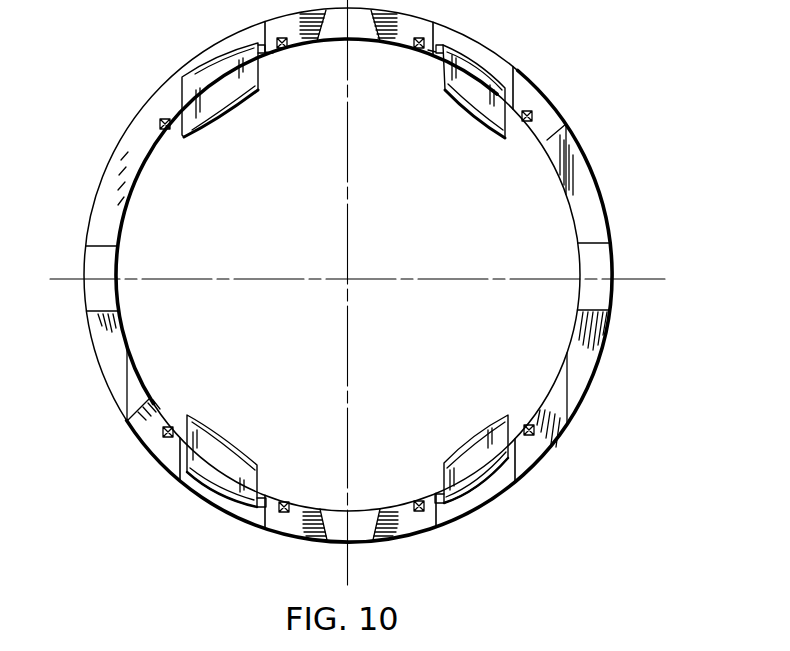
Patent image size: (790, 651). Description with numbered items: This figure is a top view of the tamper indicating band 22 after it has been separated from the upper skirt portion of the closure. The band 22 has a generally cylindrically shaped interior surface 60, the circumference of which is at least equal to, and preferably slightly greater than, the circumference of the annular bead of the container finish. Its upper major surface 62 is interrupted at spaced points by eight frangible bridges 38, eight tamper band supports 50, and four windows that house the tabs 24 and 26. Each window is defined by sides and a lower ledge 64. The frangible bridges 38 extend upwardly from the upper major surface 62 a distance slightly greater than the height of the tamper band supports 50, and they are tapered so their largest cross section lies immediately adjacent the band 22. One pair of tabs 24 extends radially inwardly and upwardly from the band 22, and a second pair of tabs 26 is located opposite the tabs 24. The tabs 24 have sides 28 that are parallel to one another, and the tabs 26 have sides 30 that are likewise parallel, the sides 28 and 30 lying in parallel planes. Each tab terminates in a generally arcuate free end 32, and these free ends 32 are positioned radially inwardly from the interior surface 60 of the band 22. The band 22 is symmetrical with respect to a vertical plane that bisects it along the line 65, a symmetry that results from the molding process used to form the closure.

The tamper indicating band 22 is at (614, 197).
The tabs 24 is at (238, 470).
The tabs 26 is at (253, 92).
The sides 28 is at (258, 484).
The sides 30 is at (267, 62).
The free end 32 is at (226, 447).
The frangible bridges 38 is at (165, 132).
The tamper band supports 50 is at (557, 160).
The interior surface 60 is at (572, 347).
The upper major surface 62 is at (580, 213).
The lower ledge 64 is at (208, 492).
The line 65 is at (68, 280).